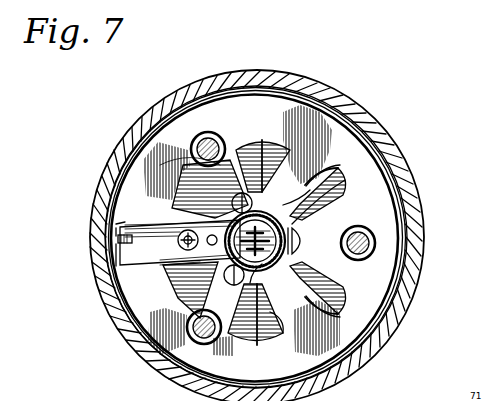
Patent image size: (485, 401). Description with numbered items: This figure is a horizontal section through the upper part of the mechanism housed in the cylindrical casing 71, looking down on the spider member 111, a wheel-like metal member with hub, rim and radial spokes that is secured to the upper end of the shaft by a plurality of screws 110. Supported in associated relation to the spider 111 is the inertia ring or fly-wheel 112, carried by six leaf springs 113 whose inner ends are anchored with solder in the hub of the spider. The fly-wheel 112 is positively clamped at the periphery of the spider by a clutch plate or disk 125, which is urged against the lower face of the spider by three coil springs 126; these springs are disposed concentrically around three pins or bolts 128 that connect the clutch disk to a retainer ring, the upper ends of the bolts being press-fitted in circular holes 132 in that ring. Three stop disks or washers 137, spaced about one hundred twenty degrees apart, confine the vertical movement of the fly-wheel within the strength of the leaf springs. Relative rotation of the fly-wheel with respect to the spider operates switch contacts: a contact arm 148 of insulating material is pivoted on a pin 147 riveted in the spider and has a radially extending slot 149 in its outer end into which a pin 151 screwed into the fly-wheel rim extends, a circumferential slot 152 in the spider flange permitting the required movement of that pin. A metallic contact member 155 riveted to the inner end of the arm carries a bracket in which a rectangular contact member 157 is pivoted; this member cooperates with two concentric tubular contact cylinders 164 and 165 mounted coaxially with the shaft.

The cylindrical casing 71 is at (143, 128).
The spider member 111 is at (363, 155).
The clutch plate or disk 125 is at (396, 183).
The inertia ring or fly-wheel 112 is at (400, 208).
The outer contact cylinder 165 is at (268, 211).
The inner contact cylinder 164 is at (278, 200).
The contact member 157 is at (264, 277).
The screws 110 is at (306, 241).
The leaf springs 113 is at (263, 148).
The stop disks or washers 137 is at (322, 176).
The metallic contact member 155 is at (183, 175).
The coil springs 126 is at (196, 142).
The pins or bolts 128 is at (218, 136).
The pin 147 is at (174, 232).
The circular holes 132 is at (173, 262).
The pin 151 is at (117, 238).
The radially extending slot 149 is at (117, 225).
The contact arm 148 is at (122, 260).
The circumferential slot 152 is at (118, 228).